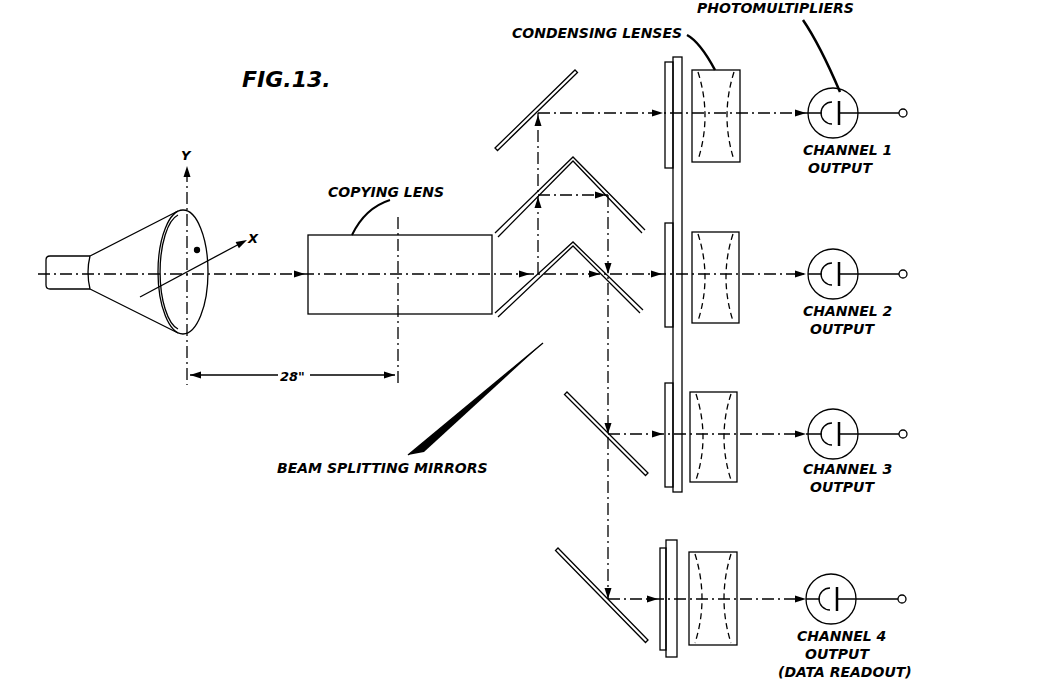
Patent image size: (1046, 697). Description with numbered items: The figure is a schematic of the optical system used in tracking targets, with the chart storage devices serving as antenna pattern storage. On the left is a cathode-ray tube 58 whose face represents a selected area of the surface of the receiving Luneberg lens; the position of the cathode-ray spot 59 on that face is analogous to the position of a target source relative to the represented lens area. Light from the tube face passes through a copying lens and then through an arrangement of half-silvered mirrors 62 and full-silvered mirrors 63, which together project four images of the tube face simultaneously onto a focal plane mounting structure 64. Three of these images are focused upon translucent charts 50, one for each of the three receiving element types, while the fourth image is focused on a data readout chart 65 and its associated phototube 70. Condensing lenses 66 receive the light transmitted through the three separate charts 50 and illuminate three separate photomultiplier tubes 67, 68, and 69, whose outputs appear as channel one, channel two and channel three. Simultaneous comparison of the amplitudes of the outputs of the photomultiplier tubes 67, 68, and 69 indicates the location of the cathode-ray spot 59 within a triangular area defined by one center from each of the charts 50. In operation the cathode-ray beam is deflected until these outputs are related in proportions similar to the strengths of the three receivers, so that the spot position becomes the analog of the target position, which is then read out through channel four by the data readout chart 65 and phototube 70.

The translucent chart 50 is at (665, 86).
The cathode-ray tube 58 is at (200, 227).
The cathode-ray spot 59 is at (202, 250).
The half-silvered mirror 62 is at (525, 203).
The full-silvered mirror 63 is at (545, 93).
The focal plane mounting structure 64 is at (681, 488).
The data readout chart 65 is at (661, 645).
The condensing lens 66 is at (740, 74).
The photomultiplier tube 67 is at (848, 102).
The photomultiplier tube 68 is at (848, 258).
The photomultiplier tube 69 is at (848, 420).
The phototube 70 is at (848, 582).